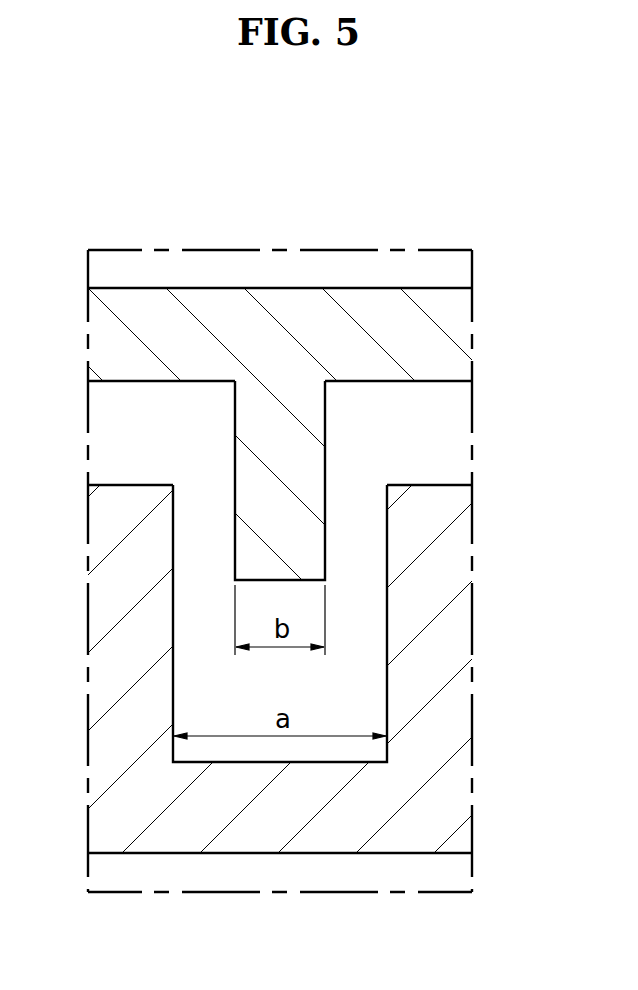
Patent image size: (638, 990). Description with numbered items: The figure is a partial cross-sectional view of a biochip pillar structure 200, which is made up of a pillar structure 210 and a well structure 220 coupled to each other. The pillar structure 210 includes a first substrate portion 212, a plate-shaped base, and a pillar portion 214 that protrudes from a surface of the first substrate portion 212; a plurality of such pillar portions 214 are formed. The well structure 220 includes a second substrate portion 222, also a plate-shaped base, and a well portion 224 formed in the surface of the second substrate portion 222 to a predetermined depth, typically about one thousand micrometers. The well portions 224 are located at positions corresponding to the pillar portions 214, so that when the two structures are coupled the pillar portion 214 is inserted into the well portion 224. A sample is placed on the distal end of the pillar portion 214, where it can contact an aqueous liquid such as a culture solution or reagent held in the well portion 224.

The biochip pillar structure 200 is at (100, 176).
The pillar structure 210 is at (291, 256).
The first substrate portion 212 is at (462, 333).
The pillar portion 214 is at (325, 431).
The well structure 220 is at (266, 884).
The second substrate portion 222 is at (462, 707).
The well portion 224 is at (387, 648).